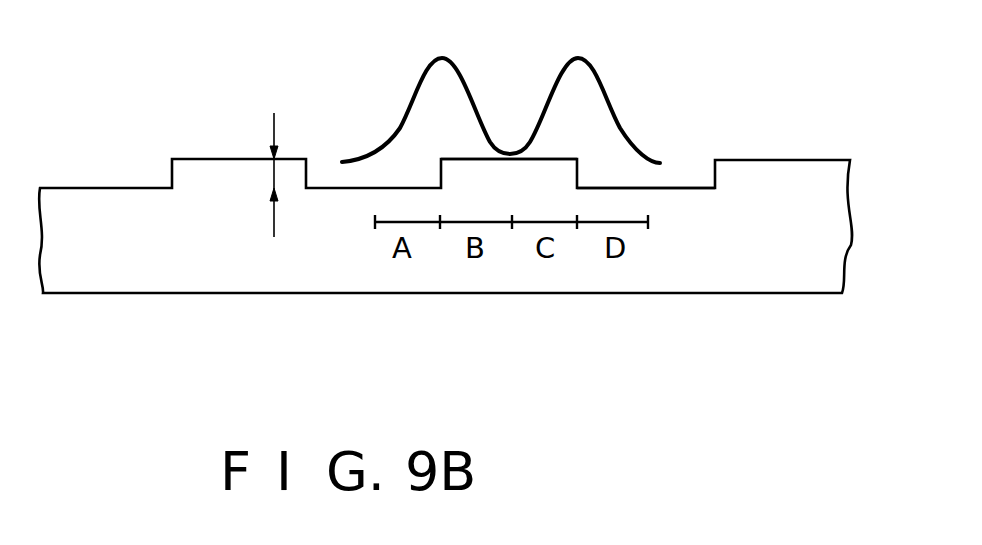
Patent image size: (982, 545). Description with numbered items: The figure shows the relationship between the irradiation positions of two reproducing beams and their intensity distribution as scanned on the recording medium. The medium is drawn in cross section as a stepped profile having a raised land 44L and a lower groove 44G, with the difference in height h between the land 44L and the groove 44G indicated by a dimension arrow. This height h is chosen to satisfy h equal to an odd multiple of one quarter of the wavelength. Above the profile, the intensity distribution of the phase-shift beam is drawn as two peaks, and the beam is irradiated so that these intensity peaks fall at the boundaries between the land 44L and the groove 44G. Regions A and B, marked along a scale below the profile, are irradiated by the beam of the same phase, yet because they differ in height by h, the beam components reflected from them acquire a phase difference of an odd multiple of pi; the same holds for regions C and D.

The land 44L is at (477, 158).
The groove 44G is at (680, 188).
The difference in height h is at (298, 189).